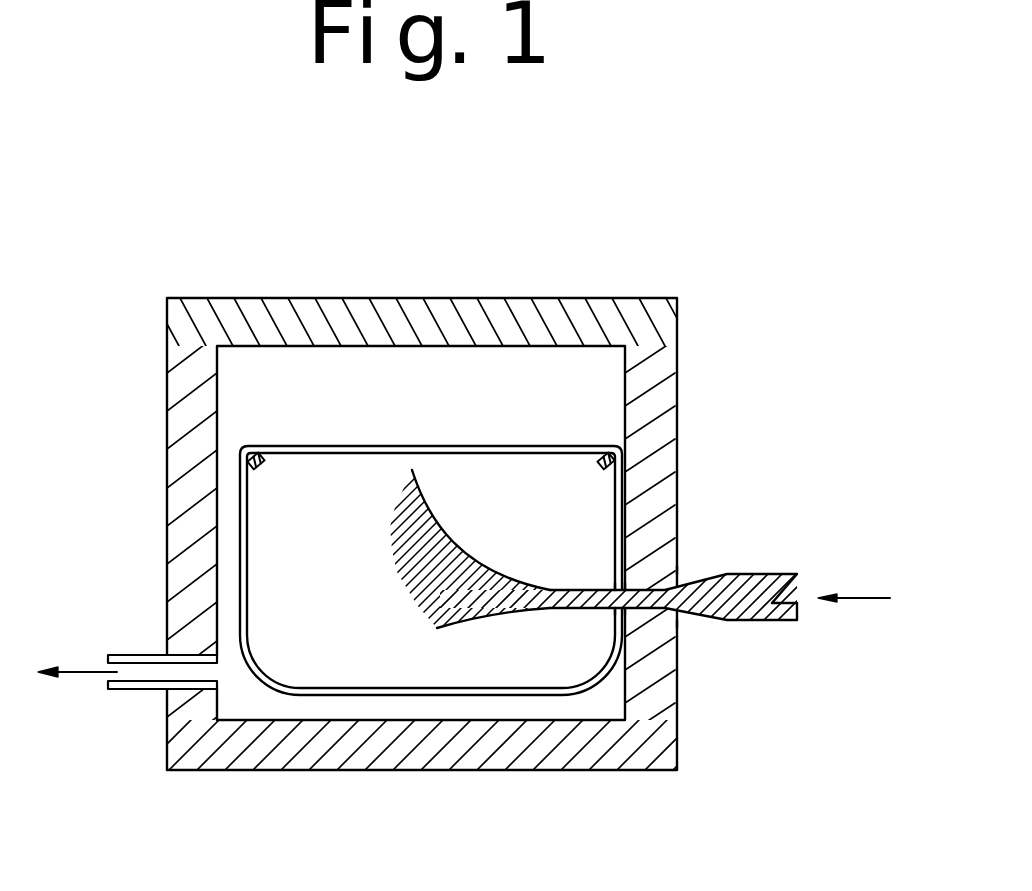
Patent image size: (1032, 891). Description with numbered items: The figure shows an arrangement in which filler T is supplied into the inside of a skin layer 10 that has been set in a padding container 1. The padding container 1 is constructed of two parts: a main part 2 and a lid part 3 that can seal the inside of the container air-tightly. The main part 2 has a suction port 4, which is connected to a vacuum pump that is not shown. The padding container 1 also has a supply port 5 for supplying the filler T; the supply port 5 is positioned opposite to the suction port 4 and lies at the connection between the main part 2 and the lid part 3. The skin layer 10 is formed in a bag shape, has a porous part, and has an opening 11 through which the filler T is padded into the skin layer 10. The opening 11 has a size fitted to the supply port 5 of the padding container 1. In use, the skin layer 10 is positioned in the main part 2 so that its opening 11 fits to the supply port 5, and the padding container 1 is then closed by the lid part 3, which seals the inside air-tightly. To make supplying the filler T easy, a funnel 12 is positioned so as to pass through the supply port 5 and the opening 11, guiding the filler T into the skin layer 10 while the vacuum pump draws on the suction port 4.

The padding container 1 is at (531, 250).
The main part 2 is at (187, 440).
The lid part 3 is at (345, 318).
The suction port 4 is at (150, 671).
The supply port 5 is at (648, 583).
The skin layer 10 is at (412, 697).
The opening 11 is at (617, 590).
The funnel 12 is at (703, 618).
The filler T is at (797, 605).